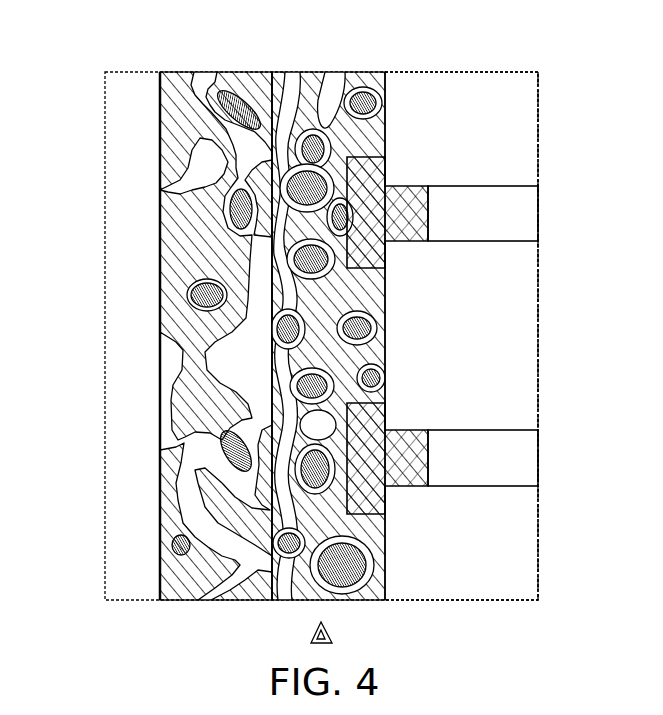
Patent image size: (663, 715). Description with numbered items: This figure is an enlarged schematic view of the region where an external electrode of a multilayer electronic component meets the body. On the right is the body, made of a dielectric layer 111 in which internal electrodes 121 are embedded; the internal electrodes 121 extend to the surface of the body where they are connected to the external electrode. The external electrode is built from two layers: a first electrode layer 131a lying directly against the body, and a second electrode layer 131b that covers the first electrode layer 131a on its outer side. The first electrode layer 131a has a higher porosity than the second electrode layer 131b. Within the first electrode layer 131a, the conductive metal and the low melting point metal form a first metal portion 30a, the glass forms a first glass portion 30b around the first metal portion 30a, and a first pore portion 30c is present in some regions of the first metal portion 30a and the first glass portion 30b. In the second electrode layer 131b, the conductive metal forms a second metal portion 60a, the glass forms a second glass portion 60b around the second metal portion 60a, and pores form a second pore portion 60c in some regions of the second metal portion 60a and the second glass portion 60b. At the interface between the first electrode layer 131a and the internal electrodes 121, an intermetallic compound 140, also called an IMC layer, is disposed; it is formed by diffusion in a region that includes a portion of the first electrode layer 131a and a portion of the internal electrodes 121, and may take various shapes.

The first metal portion 30a is at (342, 72).
The first glass portion 30b is at (290, 72).
The first pore portion 30c is at (367, 562).
The second metal portion 60a is at (165, 251).
The second glass portion 60b is at (228, 360).
The second pore portion 60c is at (191, 300).
The dielectric layer 111 is at (527, 322).
The internal electrode 121 is at (527, 210).
The first electrode layer 131a is at (386, 97).
The second electrode layer 131b is at (160, 155).
The intermetallic compound 140 is at (406, 200).